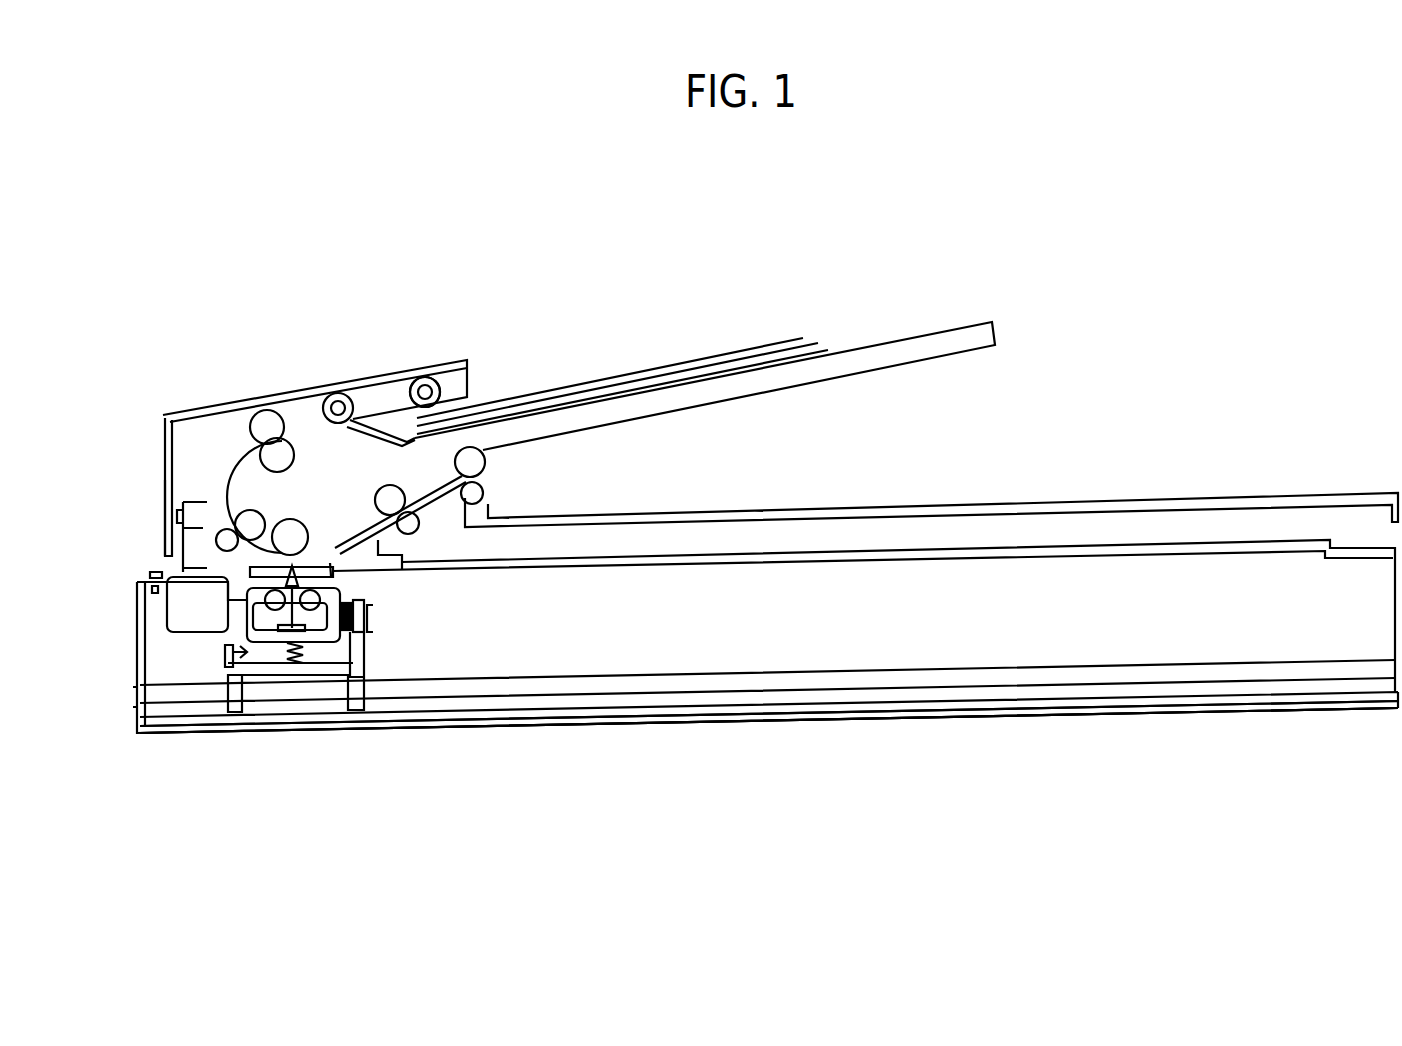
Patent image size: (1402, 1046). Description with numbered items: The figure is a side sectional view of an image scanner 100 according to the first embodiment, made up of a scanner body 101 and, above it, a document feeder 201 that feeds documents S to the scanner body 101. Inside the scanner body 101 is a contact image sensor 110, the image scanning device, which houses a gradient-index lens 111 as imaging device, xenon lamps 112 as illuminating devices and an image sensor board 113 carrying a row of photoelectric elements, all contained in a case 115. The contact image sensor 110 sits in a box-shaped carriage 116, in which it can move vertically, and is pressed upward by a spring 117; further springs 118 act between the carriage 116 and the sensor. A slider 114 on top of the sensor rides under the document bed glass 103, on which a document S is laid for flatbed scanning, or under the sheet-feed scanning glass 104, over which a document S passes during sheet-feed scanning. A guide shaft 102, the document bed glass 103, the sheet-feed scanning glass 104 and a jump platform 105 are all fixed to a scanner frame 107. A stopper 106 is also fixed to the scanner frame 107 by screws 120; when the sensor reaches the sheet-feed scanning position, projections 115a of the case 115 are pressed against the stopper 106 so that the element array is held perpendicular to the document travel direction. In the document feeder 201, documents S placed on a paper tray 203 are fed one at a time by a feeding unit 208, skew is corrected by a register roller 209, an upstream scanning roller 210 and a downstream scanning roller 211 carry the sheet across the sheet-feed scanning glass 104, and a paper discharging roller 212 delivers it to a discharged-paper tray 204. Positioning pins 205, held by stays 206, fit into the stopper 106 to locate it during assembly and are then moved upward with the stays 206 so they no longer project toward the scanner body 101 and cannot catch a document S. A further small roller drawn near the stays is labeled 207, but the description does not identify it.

The image scanner 100 is at (1177, 456).
The scanner body 101 is at (171, 743).
The guide shaft 102 is at (553, 691).
The document bed glass 103 is at (680, 566).
The sheet-feed scanning glass 104 is at (165, 487).
The jump platform 105 is at (406, 560).
The stopper 106 is at (180, 612).
The scanner frame 107 is at (1063, 708).
The contact image sensor 110 is at (147, 727).
The gradient-index lens 111 is at (278, 632).
The xenon lamps 112 is at (335, 650).
The image sensor board 113 is at (320, 632).
The slider 114 is at (298, 575).
The case 115 is at (362, 660).
The projections 115a is at (233, 652).
The box-shaped carriage 116 is at (232, 700).
The spring 117 is at (315, 680).
The springs 118 is at (417, 383).
The screws 120 is at (153, 573).
The document feeder 201 is at (288, 382).
The paper tray 203 is at (873, 352).
The discharged-paper tray 204 is at (750, 511).
The positioning pins 205 is at (183, 560).
The stays 206 is at (167, 417).
The small roller 207 is at (222, 538).
The feeding unit 208 is at (360, 387).
The register roller 209 is at (263, 422).
The upstream scanning roller 210 is at (247, 520).
The downstream scanning roller 211 is at (335, 542).
The paper discharging roller 212 is at (478, 460).
The documents S is at (665, 365).